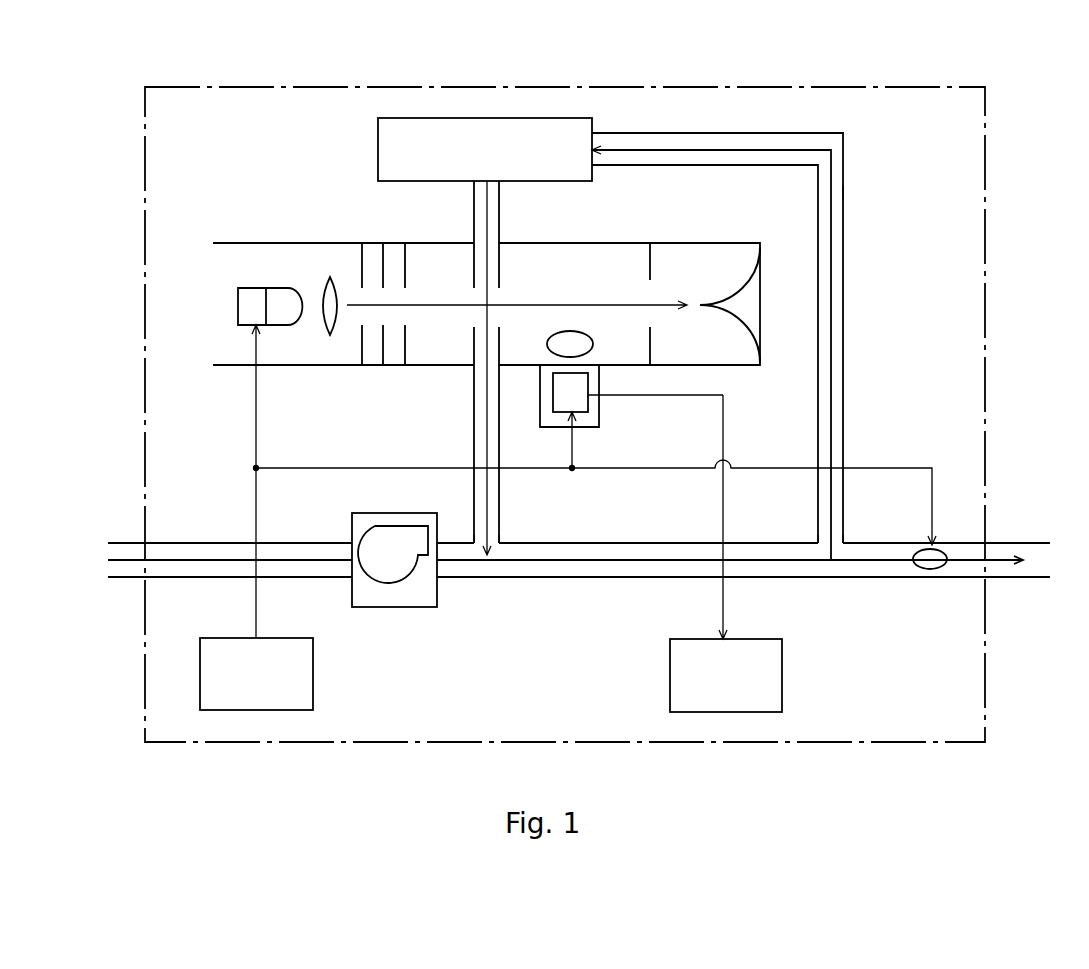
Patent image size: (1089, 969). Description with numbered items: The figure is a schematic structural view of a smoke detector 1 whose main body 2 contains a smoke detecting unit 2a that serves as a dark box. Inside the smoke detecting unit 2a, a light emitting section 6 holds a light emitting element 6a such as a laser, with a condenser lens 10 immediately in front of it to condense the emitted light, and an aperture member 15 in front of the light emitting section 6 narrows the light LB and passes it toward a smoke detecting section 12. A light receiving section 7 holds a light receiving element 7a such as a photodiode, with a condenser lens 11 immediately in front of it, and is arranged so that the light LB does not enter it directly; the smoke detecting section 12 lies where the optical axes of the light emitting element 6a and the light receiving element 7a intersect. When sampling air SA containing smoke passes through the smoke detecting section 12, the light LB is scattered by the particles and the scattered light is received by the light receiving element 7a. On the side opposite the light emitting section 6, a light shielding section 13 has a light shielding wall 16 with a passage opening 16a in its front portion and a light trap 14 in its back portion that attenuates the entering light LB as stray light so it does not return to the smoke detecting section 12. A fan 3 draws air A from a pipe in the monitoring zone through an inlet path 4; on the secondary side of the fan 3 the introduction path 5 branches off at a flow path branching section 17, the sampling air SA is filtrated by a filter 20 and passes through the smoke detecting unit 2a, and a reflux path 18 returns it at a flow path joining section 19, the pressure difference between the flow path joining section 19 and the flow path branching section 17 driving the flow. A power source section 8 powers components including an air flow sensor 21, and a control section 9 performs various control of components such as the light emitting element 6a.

The smoke detector 1 is at (987, 118).
The main body 2 is at (222, 235).
The smoke detecting unit 2a is at (262, 243).
The fan 3 is at (413, 595).
The inlet path 4 is at (187, 543).
The introduction path 5 is at (843, 318).
The light emitting section 6 is at (250, 308).
The light emitting element 6a is at (283, 320).
The light receiving section 7 is at (540, 397).
The light receiving element 7a is at (560, 403).
The power source section 8 is at (313, 675).
The control section 9 is at (670, 678).
The condenser lens 10 is at (329, 290).
The condenser lens 11 is at (592, 348).
The smoke detecting section 12 is at (513, 292).
The light shielding section 13 is at (697, 277).
The light trap 14 is at (740, 330).
The aperture member 15 is at (363, 270).
The light shielding wall 16 is at (650, 270).
The passage opening 16a is at (653, 300).
The flow path branching section 17 is at (836, 578).
The reflux path 18 is at (474, 437).
The flow path joining section 19 is at (493, 578).
The filter 20 is at (378, 135).
The air flow sensor 21 is at (930, 570).
The light LB is at (433, 318).
The sampling air SA is at (843, 192).
The air A is at (190, 562).